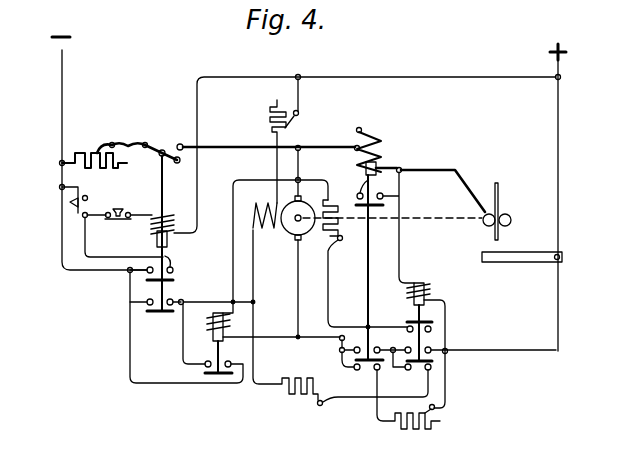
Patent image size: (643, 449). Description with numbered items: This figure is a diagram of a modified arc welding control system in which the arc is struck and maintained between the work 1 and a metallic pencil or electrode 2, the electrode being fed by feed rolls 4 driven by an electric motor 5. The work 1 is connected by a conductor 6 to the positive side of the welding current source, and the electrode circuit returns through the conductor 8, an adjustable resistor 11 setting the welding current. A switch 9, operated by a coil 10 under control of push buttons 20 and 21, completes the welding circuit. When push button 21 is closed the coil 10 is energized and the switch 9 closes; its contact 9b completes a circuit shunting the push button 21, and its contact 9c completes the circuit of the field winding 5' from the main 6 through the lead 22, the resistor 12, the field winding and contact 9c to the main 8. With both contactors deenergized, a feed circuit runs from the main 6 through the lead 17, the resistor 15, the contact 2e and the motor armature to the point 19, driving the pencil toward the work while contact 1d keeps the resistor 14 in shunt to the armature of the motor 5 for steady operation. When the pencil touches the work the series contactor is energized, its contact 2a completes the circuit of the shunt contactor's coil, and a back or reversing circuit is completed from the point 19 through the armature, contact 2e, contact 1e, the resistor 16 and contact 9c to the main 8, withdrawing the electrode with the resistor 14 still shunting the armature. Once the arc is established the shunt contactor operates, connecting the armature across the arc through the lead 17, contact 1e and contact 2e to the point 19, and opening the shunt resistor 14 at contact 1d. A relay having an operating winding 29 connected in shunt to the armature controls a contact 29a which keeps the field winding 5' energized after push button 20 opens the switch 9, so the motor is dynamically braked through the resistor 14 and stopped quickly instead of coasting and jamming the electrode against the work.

The work 1 is at (511, 263).
The contact of contactor #1 1d is at (405, 319).
The contact of contactor #1 1e is at (412, 371).
The electrode 2 is at (500, 235).
The contact of contactor #2 2a is at (378, 210).
The contact of contactor #2 2e is at (368, 371).
The feed rolls 4 is at (511, 213).
The electric motor 5 is at (357, 258).
The field winding 5' is at (258, 206).
The conductor 6 is at (561, 126).
The conductor 8 is at (64, 98).
The switch 9 is at (160, 144).
The contact 9b is at (175, 279).
The contact 9c is at (160, 315).
The coil 10 is at (157, 213).
The adjustable resistor 11 is at (80, 150).
The resistance 12 is at (271, 111).
The resistor 14 is at (337, 200).
The resistor 15 is at (420, 430).
The resistor 16 is at (296, 396).
The lead 17 is at (497, 353).
The point 19 is at (300, 146).
The push button 20 is at (119, 222).
The push button 21 is at (89, 200).
The lead 22 is at (415, 77).
The operating winding 29 is at (211, 325).
The contact 29a is at (213, 380).